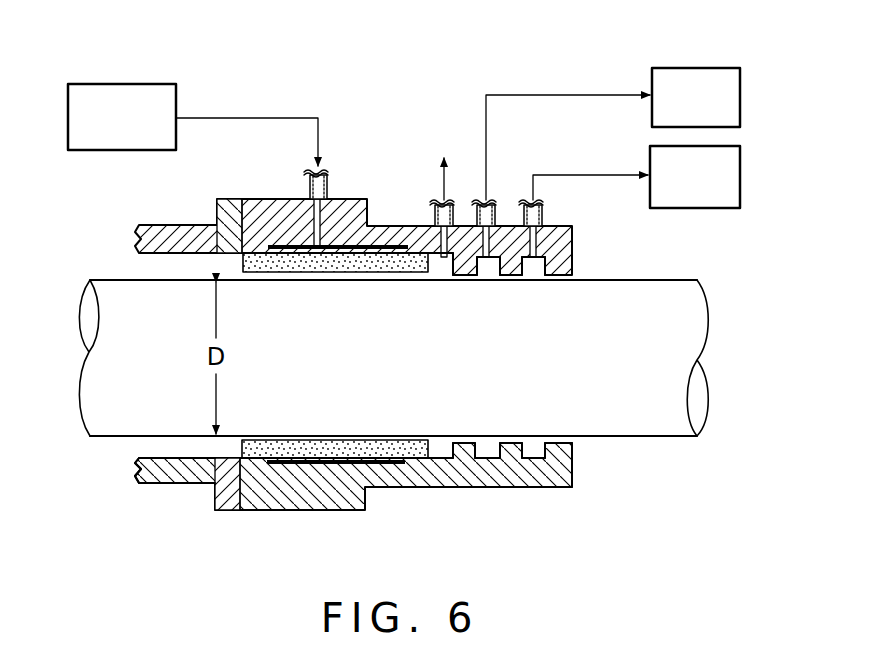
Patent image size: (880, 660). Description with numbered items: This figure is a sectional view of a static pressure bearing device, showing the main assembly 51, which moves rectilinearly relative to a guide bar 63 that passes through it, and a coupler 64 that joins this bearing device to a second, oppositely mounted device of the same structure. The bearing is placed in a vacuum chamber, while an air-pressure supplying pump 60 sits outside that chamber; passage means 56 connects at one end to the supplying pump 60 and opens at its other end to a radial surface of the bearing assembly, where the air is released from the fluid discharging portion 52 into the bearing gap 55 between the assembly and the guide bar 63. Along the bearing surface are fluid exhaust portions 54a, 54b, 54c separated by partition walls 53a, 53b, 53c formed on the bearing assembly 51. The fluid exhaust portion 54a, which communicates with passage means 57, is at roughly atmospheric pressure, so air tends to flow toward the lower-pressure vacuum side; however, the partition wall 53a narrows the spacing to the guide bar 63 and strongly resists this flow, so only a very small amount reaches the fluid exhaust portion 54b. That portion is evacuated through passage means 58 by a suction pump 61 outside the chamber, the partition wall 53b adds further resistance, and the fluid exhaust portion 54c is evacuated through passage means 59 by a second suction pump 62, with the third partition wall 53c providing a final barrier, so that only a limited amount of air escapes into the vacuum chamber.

The main assembly 51 is at (548, 485).
The fluid discharging portion 52 is at (388, 452).
The partition wall 53a is at (463, 450).
The partition wall 53b is at (512, 455).
The third partition wall 53c is at (560, 452).
The fluid exhaust portion 54a is at (440, 262).
The fluid exhaust portion 54b is at (489, 262).
The fluid exhaust portion 54c is at (533, 262).
The bearing gap 55 is at (332, 437).
The passage means 56 is at (328, 222).
The passage means 57 is at (437, 237).
The passage means 58 is at (487, 235).
The passage means 59 is at (537, 247).
The air-pressure supplying pump 60 is at (137, 84).
The suction pump 61 is at (690, 68).
The suction pump 62 is at (688, 208).
The guide bar 63 is at (668, 432).
The coupler 64 is at (172, 480).